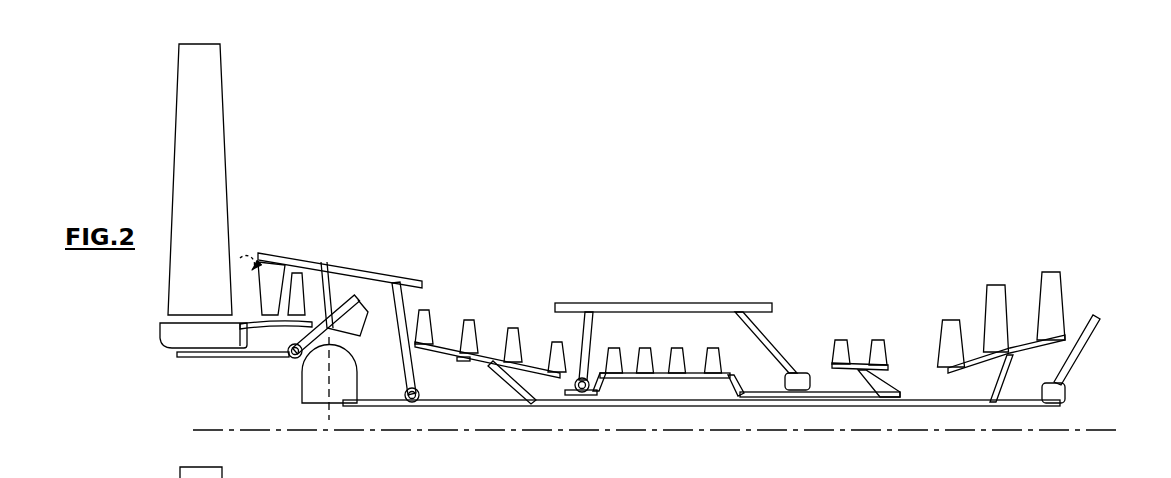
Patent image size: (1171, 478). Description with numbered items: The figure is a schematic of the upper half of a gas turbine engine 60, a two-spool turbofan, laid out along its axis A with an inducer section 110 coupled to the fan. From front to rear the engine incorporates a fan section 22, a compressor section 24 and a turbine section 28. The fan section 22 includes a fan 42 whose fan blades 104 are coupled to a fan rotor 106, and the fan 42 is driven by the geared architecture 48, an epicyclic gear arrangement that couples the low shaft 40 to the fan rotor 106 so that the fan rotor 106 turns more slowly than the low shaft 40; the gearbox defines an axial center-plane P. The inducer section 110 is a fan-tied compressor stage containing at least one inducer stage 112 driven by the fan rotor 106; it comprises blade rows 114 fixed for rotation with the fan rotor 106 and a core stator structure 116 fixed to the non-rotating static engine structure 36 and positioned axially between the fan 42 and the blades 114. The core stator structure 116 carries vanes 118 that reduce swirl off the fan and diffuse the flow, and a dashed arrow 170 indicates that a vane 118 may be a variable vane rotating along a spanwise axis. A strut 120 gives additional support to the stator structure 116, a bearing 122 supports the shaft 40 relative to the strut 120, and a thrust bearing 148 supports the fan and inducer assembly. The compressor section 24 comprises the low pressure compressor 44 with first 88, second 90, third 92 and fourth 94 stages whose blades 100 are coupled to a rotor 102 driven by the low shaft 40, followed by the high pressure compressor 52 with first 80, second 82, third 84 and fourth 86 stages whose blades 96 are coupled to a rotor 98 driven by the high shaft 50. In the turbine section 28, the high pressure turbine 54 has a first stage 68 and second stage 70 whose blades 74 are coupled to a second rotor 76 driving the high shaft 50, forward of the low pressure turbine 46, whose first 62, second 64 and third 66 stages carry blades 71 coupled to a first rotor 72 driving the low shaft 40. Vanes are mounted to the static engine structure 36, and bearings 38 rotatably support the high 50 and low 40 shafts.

The fan section 22 is at (268, 113).
The compressor section 24 is at (460, 213).
The turbine section 28 is at (933, 225).
The static engine structure 36 is at (398, 282).
The bearings 38 is at (582, 378).
The low shaft 40 is at (900, 406).
The fan 42 is at (153, 305).
The low pressure compressor 44 is at (478, 370).
The low pressure turbine 46 is at (1030, 375).
The geared architecture 48 is at (302, 384).
The high shaft 50 is at (828, 398).
The high pressure compressor 52 is at (645, 380).
The high pressure turbine 54 is at (898, 374).
The gas turbine engine 60 is at (700, 185).
The first stage 62 is at (951, 318).
The second stage 64 is at (996, 283).
The third stage 66 is at (1051, 270).
The first stage 68 is at (840, 338).
The second stage 70 is at (878, 338).
The blades 71 is at (1057, 305).
The first rotor 72 is at (978, 369).
The blades 74 is at (885, 352).
The second rotor 76 is at (855, 372).
The first stage 80 is at (614, 346).
The second stage 82 is at (646, 346).
The third stage 84 is at (678, 346).
The fourth stage 86 is at (713, 346).
The first stage 88 is at (429, 308).
The second stage 90 is at (471, 318).
The third stage 92 is at (513, 326).
The fourth stage 94 is at (553, 340).
The blades 96 is at (718, 363).
The rotor 98 is at (697, 380).
The blades 100 is at (507, 348).
The rotor 102 is at (445, 355).
The fan blades 104 is at (205, 208).
The fan rotor 106 is at (246, 348).
The inducer section 110 is at (335, 215).
The inducer stage 112 is at (318, 246).
The blade rows 114 is at (296, 300).
The core stator structure 116 is at (338, 260).
The vanes 118 is at (266, 284).
The strut 120 is at (360, 337).
The bearing 122 is at (408, 402).
The thrust bearing 148 is at (292, 357).
The dashed arrow 170 is at (240, 262).
The gearbox axial center-plane P is at (329, 422).
The axis A is at (1105, 428).